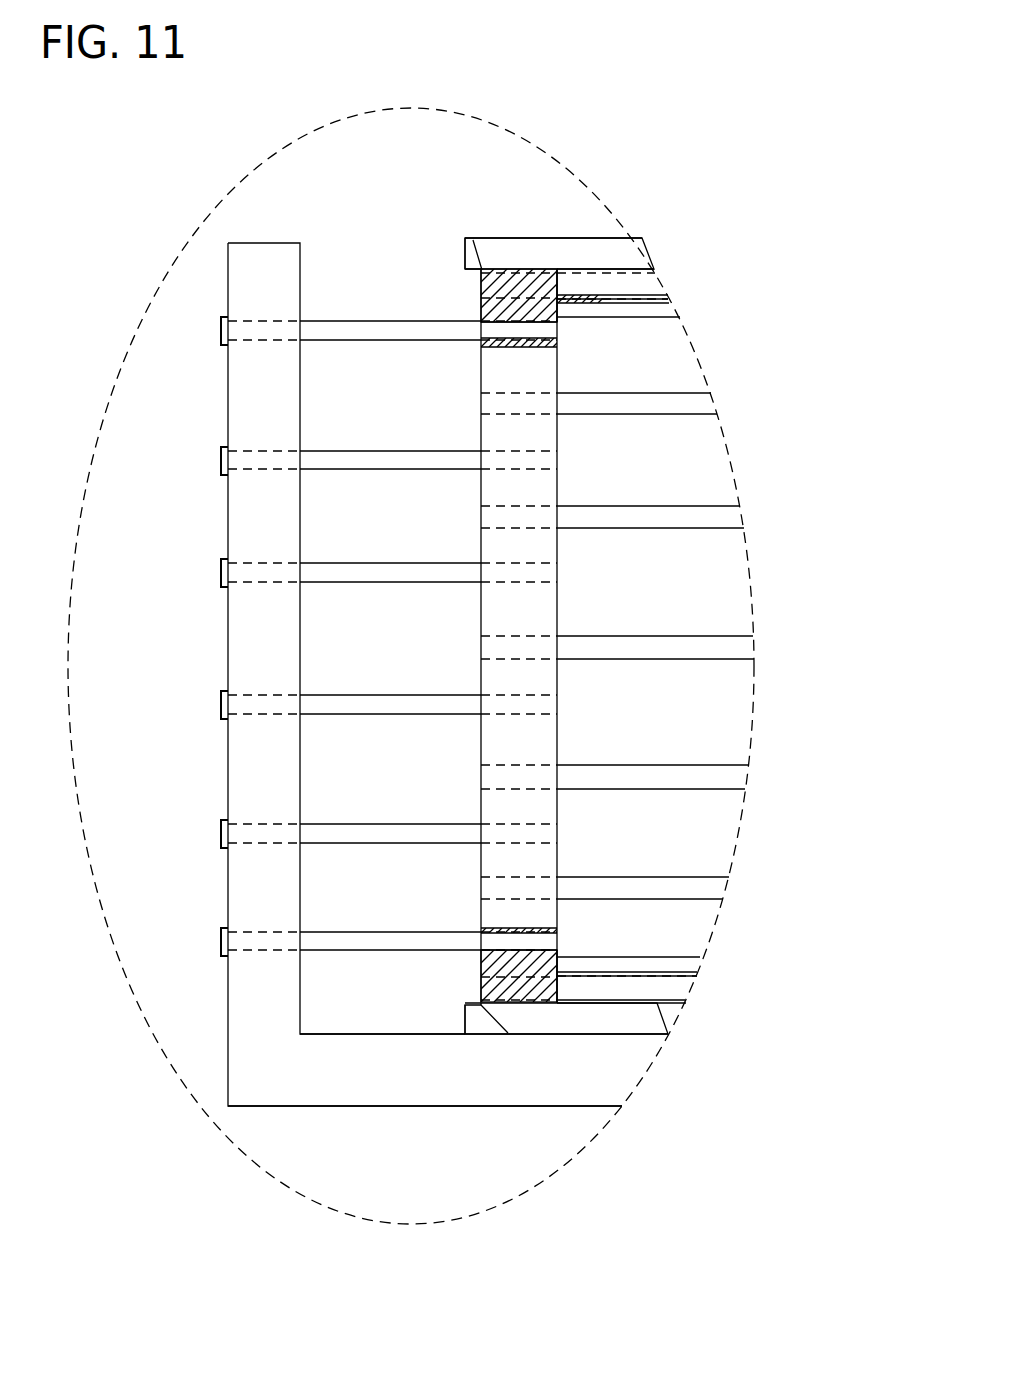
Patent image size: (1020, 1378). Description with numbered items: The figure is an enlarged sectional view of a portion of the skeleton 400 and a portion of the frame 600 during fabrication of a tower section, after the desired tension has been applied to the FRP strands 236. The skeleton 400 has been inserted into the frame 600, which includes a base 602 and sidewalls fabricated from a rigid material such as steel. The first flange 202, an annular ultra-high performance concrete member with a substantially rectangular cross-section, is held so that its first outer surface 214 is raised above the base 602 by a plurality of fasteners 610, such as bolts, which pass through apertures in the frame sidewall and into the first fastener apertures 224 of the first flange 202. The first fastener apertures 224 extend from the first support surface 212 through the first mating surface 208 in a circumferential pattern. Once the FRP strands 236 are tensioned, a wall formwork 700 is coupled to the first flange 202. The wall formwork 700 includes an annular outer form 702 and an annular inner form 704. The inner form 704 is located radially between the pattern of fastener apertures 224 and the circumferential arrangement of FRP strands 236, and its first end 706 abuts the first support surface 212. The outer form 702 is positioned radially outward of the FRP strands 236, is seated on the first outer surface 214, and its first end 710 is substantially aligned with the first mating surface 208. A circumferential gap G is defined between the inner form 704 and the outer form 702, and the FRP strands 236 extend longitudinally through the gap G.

The skeleton 400 is at (478, 160).
The frame 600 is at (265, 1120).
The base 602 is at (397, 1105).
The fasteners 610 is at (340, 563).
The first flange 202 is at (470, 366).
The first mating surface 208 is at (481, 322).
The first support surface 212 is at (583, 283).
The first outer surface 214 is at (493, 238).
The first fastener apertures 224 is at (510, 320).
The FRP strands 236 is at (597, 272).
The wall formwork 700 is at (463, 228).
The outer form 702 is at (620, 237).
The inner form 704 is at (600, 318).
The first end of inner form 706 is at (560, 312).
The first end of outer form 710 is at (481, 269).
The circumferential gap G is at (645, 268).